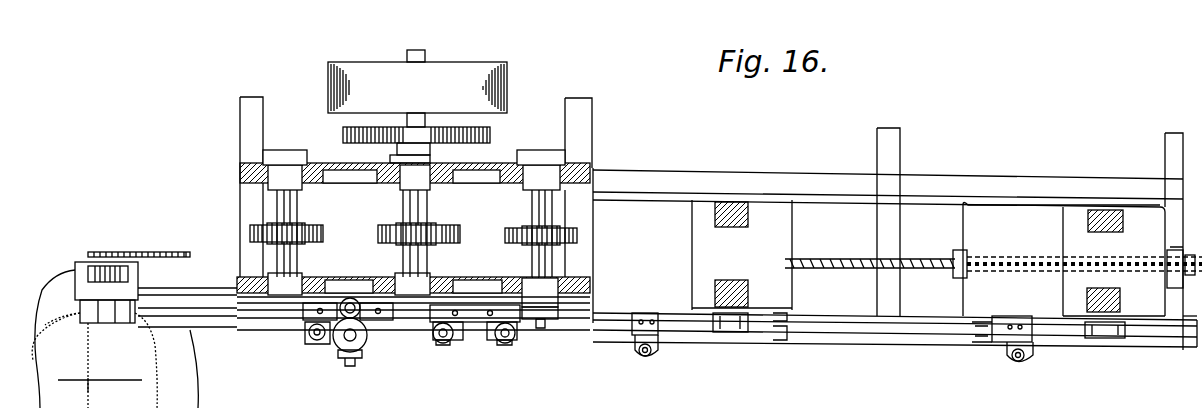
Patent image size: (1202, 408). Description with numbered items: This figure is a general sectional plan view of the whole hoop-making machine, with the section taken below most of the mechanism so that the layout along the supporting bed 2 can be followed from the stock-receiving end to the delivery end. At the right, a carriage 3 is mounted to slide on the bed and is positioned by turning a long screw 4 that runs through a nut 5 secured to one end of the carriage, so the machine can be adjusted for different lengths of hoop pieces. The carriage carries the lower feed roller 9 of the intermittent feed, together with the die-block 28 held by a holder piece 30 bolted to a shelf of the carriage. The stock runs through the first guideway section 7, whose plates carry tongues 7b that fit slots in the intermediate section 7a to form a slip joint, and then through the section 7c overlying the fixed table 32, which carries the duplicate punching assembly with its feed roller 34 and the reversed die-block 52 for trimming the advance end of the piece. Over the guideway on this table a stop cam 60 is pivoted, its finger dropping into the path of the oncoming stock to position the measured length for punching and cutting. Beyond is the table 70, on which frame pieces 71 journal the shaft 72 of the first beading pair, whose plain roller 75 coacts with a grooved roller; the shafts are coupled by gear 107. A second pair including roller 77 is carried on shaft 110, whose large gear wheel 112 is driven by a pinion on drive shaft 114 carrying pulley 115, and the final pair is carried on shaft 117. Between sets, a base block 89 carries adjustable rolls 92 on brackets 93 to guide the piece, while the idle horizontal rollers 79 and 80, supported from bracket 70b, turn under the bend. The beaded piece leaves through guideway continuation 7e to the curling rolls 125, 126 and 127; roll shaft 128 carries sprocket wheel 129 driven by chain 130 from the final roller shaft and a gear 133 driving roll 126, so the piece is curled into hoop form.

The supporting bed 2 is at (1068, 178).
The carriage 3 is at (1064, 199).
The long screw 4 is at (890, 262).
The nut 5 is at (955, 272).
The guideway 7 is at (1165, 345).
The intermediate section of guideway 7a is at (865, 340).
The tongues 7b is at (975, 330).
The guideway section 7c is at (565, 320).
The guideway continuation 7e is at (212, 330).
The lower feed roller 9 is at (1105, 338).
The die-block 28 is at (1015, 333).
The holder piece 30 is at (1030, 352).
The fixed table 32 is at (802, 241).
The feed roller 34 is at (736, 332).
The die-block 52 is at (645, 328).
The stop cam 60 is at (635, 318).
The table 70 is at (592, 282).
The bracket 70b is at (205, 292).
The frame pieces 71 is at (592, 160).
The shaft 72 is at (532, 210).
The plain roller 75 is at (540, 322).
The beading roller 77 is at (450, 325).
The male horizontal roller 79 is at (352, 298).
The female horizontal roller 80 is at (366, 346).
The base block 89 is at (475, 322).
The adjustable rolls 92 is at (452, 343).
The brackets 93 is at (472, 340).
The gear 107 is at (453, 244).
The shaft 110 is at (427, 211).
The large gear wheel 112 is at (490, 135).
The drive shaft 114 is at (424, 52).
The pulley 115 is at (417, 85).
The shaft 117 is at (297, 208).
The curling roll 125 is at (142, 325).
The curling roll 126 is at (78, 322).
The curling roll 127 is at (102, 323).
The roll shaft 128 is at (75, 272).
The sprocket wheel 129 is at (108, 253).
The chain 130 is at (193, 250).
The gear 133 is at (138, 272).